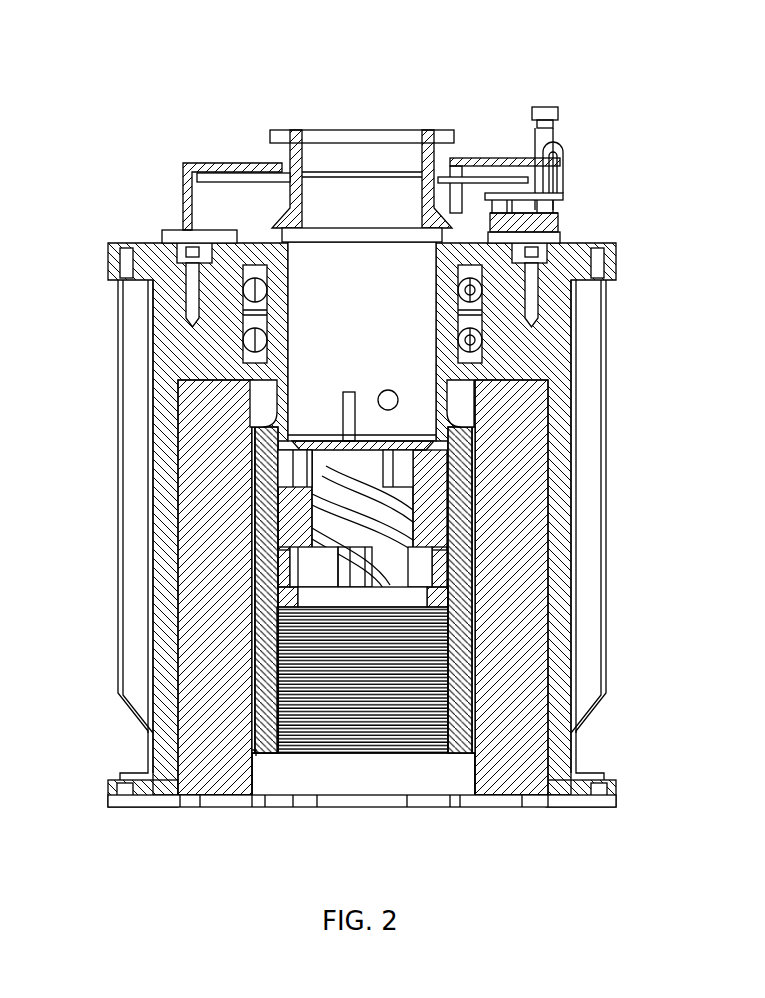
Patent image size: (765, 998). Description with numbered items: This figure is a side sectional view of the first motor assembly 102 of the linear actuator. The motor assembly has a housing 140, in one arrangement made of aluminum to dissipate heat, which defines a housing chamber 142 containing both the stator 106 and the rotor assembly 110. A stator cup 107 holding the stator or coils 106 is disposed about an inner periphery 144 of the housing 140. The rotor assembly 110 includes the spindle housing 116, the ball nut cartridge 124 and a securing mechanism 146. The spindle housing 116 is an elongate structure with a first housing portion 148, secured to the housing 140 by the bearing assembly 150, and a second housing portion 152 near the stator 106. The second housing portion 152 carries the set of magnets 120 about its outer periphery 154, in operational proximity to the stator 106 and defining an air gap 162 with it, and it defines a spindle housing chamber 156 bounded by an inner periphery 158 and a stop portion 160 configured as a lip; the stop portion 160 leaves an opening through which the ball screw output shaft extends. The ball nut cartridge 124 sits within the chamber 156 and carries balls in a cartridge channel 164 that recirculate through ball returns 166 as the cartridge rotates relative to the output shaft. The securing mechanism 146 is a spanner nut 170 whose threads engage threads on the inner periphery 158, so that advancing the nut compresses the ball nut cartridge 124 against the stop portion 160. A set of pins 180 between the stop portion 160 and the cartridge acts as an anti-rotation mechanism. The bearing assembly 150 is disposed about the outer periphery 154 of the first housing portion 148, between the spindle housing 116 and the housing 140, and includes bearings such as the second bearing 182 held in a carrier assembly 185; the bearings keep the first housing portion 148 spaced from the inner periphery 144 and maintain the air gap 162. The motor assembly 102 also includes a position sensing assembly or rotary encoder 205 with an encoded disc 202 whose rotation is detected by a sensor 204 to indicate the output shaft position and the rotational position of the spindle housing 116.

The first motor assembly 102 is at (632, 59).
The stator 106 is at (528, 790).
The stator cup 107 is at (180, 401).
The rotor assembly 110 is at (486, 557).
The spindle housing 116 is at (273, 760).
The set of magnets 120 is at (258, 755).
The ball nut cartridge 124 is at (298, 495).
The housing 140 is at (608, 477).
The housing chamber 142 is at (377, 783).
The inner periphery 144 is at (550, 416).
The securing mechanism 146 is at (452, 600).
The first housing portion 148 is at (285, 257).
The bearing assembly 150 is at (224, 335).
The second housing portion 152 is at (273, 555).
The outer periphery 154 is at (458, 680).
The spindle housing chamber 156 is at (417, 760).
The inner periphery 158 is at (440, 520).
The stop portion 160 is at (452, 442).
The air gap 162 is at (253, 755).
The cartridge channel 164 is at (335, 518).
The ball returns 166 is at (295, 465).
The spanner nut 170 is at (287, 600).
The set of pins 180 is at (243, 292).
The second bearing 182 is at (488, 340).
The carrier assembly 185 is at (569, 231).
The encoded disc 202 is at (203, 175).
The sensor 204 is at (505, 158).
The position sensing assembly 205 is at (476, 121).